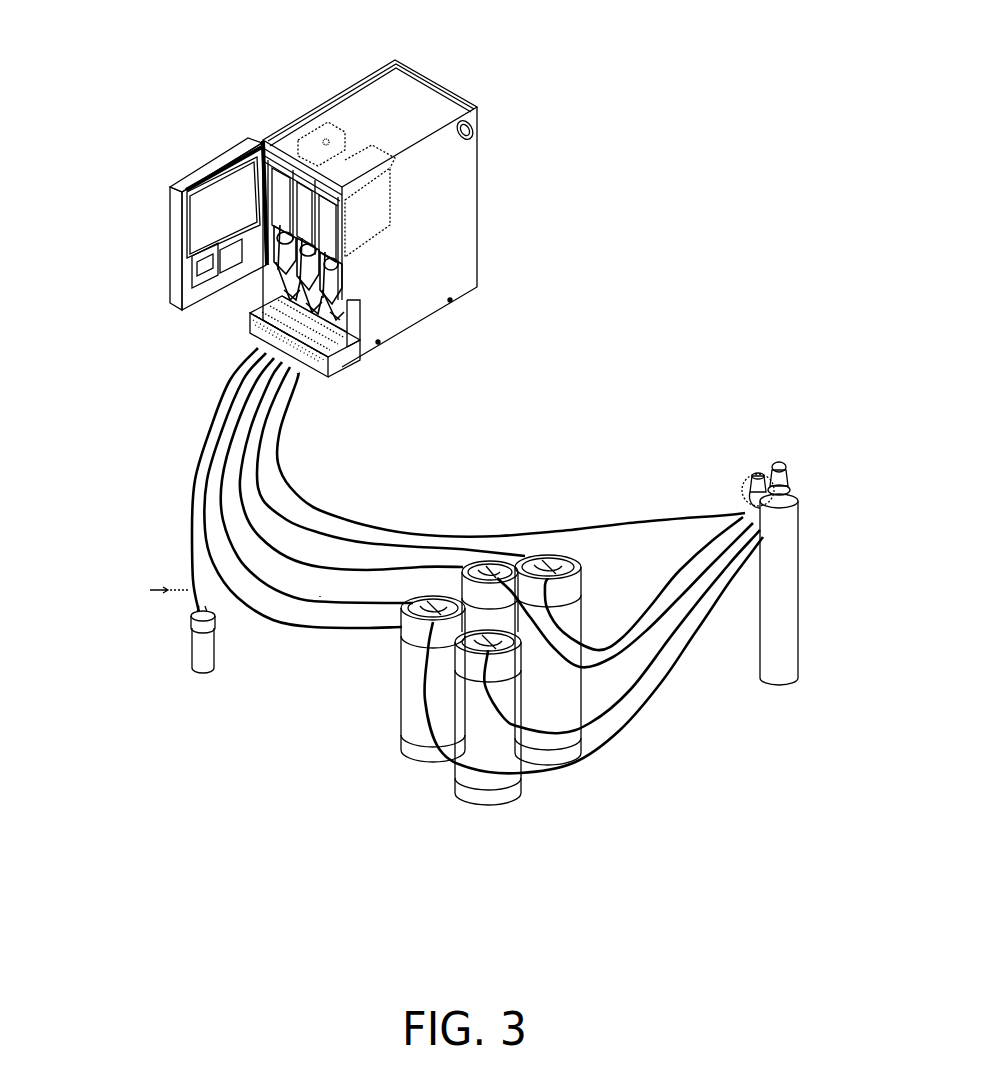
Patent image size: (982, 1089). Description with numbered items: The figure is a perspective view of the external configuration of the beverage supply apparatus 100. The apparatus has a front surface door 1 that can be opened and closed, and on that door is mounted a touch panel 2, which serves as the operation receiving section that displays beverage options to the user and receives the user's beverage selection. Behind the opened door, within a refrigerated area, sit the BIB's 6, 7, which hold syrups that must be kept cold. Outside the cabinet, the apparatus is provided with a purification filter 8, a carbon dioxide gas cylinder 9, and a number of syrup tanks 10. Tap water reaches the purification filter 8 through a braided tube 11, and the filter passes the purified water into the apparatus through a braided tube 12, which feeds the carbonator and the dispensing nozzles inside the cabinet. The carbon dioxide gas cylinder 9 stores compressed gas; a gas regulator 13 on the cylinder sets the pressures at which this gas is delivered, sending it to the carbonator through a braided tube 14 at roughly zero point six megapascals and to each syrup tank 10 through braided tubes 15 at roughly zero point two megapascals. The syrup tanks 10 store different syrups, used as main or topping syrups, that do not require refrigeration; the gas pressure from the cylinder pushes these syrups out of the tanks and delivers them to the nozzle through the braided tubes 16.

The beverage supply apparatus 100 is at (430, 81).
The front surface door 1 is at (212, 166).
The touch panel 2 is at (222, 212).
The BIB 6 is at (308, 147).
The BIB 7 is at (376, 194).
The purification filter 8 is at (203, 673).
The carbon dioxide gas cylinder 9 is at (763, 582).
The syrup tank 10 is at (462, 592).
The braided tube 11 is at (190, 585).
The braided tube 12 is at (210, 421).
The gas regulator 13 is at (758, 478).
The braided tube 14 is at (611, 523).
The braided tubes 15 is at (682, 631).
The braided tubes 16 is at (380, 548).